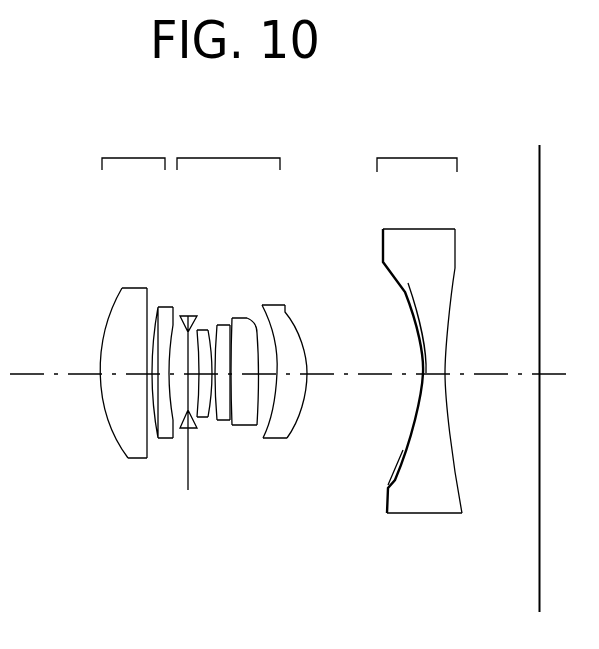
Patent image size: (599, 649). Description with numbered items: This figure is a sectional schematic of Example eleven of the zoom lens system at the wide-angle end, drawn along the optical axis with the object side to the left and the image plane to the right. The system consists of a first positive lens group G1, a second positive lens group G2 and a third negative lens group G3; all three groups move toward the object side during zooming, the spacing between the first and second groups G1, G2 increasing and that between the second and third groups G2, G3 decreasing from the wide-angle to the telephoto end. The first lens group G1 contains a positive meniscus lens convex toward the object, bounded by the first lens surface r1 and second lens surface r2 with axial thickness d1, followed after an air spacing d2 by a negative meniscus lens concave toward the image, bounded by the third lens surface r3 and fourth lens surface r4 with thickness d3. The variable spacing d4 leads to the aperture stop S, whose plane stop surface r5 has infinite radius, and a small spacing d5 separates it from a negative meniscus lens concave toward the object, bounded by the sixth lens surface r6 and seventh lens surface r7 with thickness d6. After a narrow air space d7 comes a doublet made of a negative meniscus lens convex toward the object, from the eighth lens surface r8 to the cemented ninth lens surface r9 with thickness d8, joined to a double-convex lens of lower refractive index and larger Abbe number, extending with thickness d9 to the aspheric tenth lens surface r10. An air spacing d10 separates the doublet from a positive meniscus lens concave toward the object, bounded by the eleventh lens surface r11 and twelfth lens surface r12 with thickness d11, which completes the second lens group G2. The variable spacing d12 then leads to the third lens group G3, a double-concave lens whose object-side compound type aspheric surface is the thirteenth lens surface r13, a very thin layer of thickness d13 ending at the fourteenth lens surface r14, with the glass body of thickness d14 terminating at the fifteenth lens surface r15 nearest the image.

The first positive lens group G1 is at (133, 142).
The second positive lens group G2 is at (228, 142).
The third negative lens group G3 is at (417, 142).
The aperture stop S is at (188, 316).
The first lens surface r1 is at (106, 308).
The second lens surface r2 is at (147, 323).
The third lens surface r3 is at (154, 307).
The fourth lens surface r4 is at (170, 325).
The fifth lens surface (stop surface) r5 is at (200, 330).
The sixth lens surface r6 is at (213, 345).
The seventh lens surface r7 is at (220, 320).
The eighth lens surface r8 is at (228, 325).
The ninth lens surface r9 is at (238, 318).
The tenth lens surface r10 is at (256, 330).
The eleventh lens surface r11 is at (272, 312).
The twelfth lens surface r12 is at (303, 320).
The thirteenth lens surface r13 is at (380, 282).
The fourteenth lens surface r14 is at (408, 283).
The fifteenth lens surface r15 is at (455, 270).
The spacing between first and second lens surfaces d1 is at (123, 373).
The spacing between second and third lens surfaces d2 is at (150, 442).
The spacing between third and fourth lens surfaces d3 is at (158, 442).
The spacing between fourth and fifth lens surfaces d4 is at (175, 430).
The spacing between fifth and sixth lens surfaces d5 is at (200, 430).
The spacing between sixth and seventh lens surfaces d6 is at (205, 432).
The spacing between seventh and eighth lens surfaces d7 is at (217, 432).
The spacing between eighth and ninth lens surfaces d8 is at (227, 432).
The spacing between ninth and tenth lens surfaces d9 is at (246, 371).
The spacing between tenth and eleventh lens surfaces d10 is at (242, 432).
The spacing between eleventh and twelfth lens surfaces d11 is at (287, 438).
The spacing between twelfth and thirteenth lens surfaces d12 is at (345, 375).
The spacing between thirteenth and fourteenth lens surfaces d13 is at (418, 381).
The spacing between fourteenth and fifteenth lens surfaces d14 is at (428, 385).